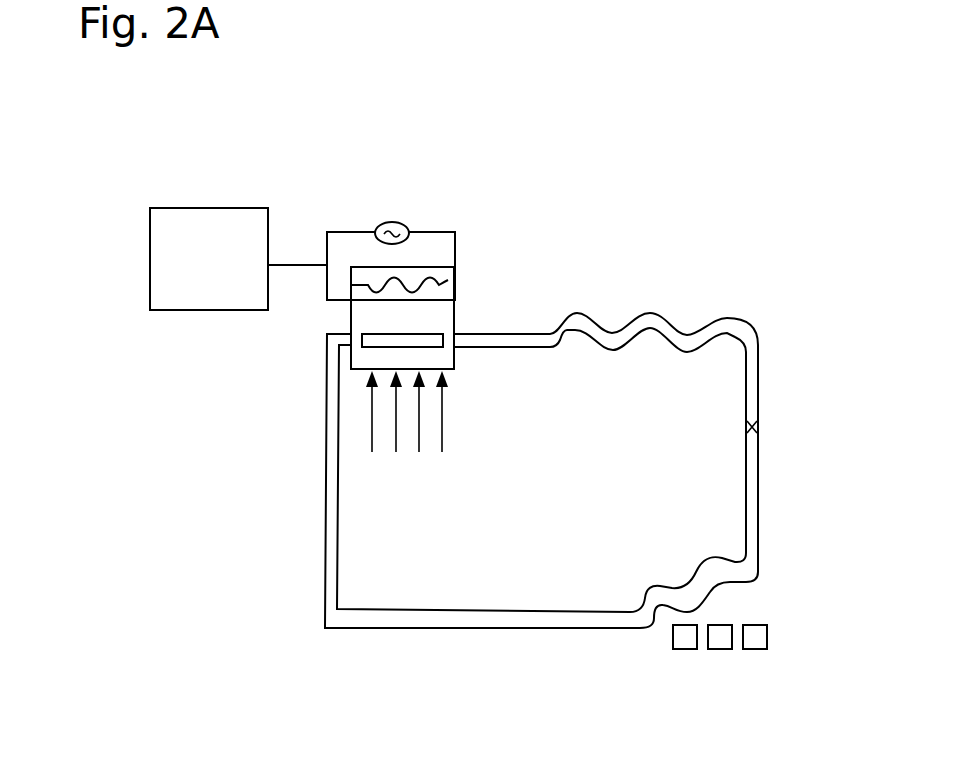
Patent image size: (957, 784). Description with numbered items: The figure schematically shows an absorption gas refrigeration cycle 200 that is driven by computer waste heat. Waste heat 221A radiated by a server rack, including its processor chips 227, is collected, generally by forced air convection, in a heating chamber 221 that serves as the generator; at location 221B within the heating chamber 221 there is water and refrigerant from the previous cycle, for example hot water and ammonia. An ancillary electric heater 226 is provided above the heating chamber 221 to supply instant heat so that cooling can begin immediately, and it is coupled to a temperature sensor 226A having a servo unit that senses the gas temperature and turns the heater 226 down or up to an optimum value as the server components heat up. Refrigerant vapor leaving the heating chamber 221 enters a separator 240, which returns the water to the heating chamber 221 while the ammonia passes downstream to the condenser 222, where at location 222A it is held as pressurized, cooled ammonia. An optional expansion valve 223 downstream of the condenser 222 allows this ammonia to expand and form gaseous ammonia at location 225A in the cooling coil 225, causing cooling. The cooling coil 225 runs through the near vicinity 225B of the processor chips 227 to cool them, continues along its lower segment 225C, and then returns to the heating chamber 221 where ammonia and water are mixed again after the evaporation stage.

The absorption gas refrigeration cycle 200 is at (152, 124).
The heating chamber 221 is at (351, 312).
The waste heat 221A is at (406, 463).
The water and refrigerant 221B is at (372, 357).
The condenser 222 is at (653, 313).
The pressurized and cooled ammonia 222A is at (760, 328).
The expansion valve 223 is at (762, 428).
The cooling coil 225 is at (757, 478).
The gaseous ammonia 225A is at (757, 533).
The near vicinity of the processor chips 225B is at (757, 582).
The conduit bottom segment 225C is at (427, 622).
The ancillary electric heater 226 is at (448, 280).
The temperature sensor 226A is at (150, 255).
The processor chips 227 is at (685, 638).
The separator 240 is at (440, 335).